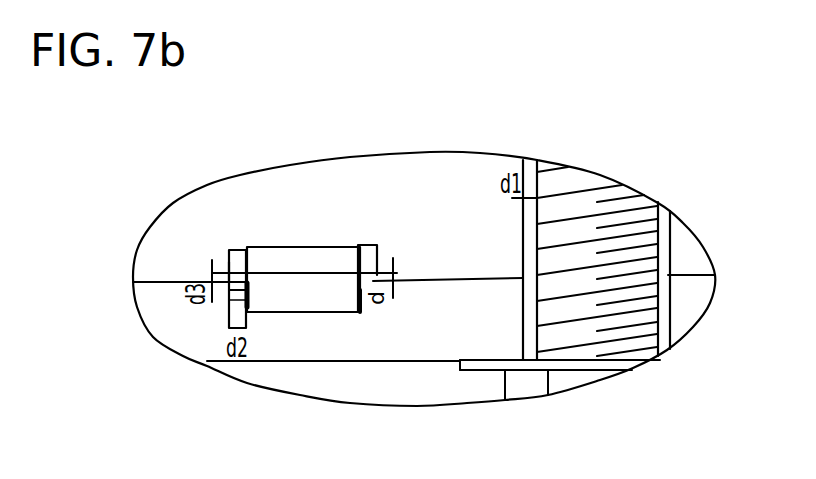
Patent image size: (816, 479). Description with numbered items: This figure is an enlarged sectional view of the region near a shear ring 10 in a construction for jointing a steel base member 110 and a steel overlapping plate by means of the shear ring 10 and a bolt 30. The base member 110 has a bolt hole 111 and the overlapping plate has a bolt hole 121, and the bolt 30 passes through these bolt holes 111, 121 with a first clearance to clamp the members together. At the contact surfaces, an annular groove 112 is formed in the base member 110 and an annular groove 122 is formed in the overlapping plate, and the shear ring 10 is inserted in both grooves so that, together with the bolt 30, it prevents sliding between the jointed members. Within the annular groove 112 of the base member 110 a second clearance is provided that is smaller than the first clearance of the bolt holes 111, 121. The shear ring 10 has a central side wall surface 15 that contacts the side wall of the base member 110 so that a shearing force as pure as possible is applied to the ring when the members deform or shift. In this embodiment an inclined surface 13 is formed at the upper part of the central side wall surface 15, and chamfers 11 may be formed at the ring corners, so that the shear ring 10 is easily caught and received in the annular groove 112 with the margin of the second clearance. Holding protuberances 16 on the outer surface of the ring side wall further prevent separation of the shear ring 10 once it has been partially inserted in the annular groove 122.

The shear ring 10 is at (298, 263).
The chamfer 11 is at (358, 312).
The inclined surface 13 is at (230, 250).
The central side wall surface 15 is at (230, 272).
The holding protuberance 16 is at (247, 304).
The bolt 30 is at (573, 185).
The steel base member 110 is at (437, 214).
The bolt hole 111 is at (664, 308).
The annular groove 112 is at (373, 257).
The bolt hole 121 is at (664, 243).
The annular groove 122 is at (358, 283).